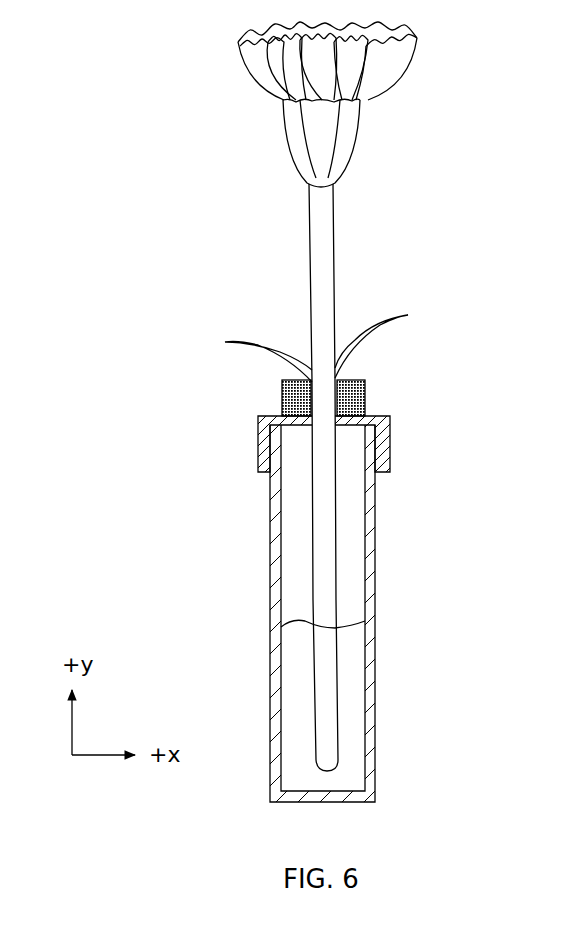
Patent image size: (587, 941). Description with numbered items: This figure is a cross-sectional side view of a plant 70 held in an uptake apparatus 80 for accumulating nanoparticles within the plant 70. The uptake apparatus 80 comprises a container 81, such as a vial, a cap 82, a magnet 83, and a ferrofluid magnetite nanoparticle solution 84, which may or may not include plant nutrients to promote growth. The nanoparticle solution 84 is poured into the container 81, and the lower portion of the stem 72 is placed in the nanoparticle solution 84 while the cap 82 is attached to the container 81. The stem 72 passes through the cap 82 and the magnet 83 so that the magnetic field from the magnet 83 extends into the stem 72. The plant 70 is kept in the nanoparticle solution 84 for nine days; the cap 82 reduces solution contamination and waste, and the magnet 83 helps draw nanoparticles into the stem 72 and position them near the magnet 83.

The plant 70 is at (445, 103).
The stem 72 is at (328, 540).
The uptake apparatus 80 is at (128, 383).
The container 81 is at (268, 555).
The cap 82 is at (262, 447).
The magnet 83 is at (367, 392).
The ferrofluid magnetite nanoparticle solution 84 is at (350, 681).